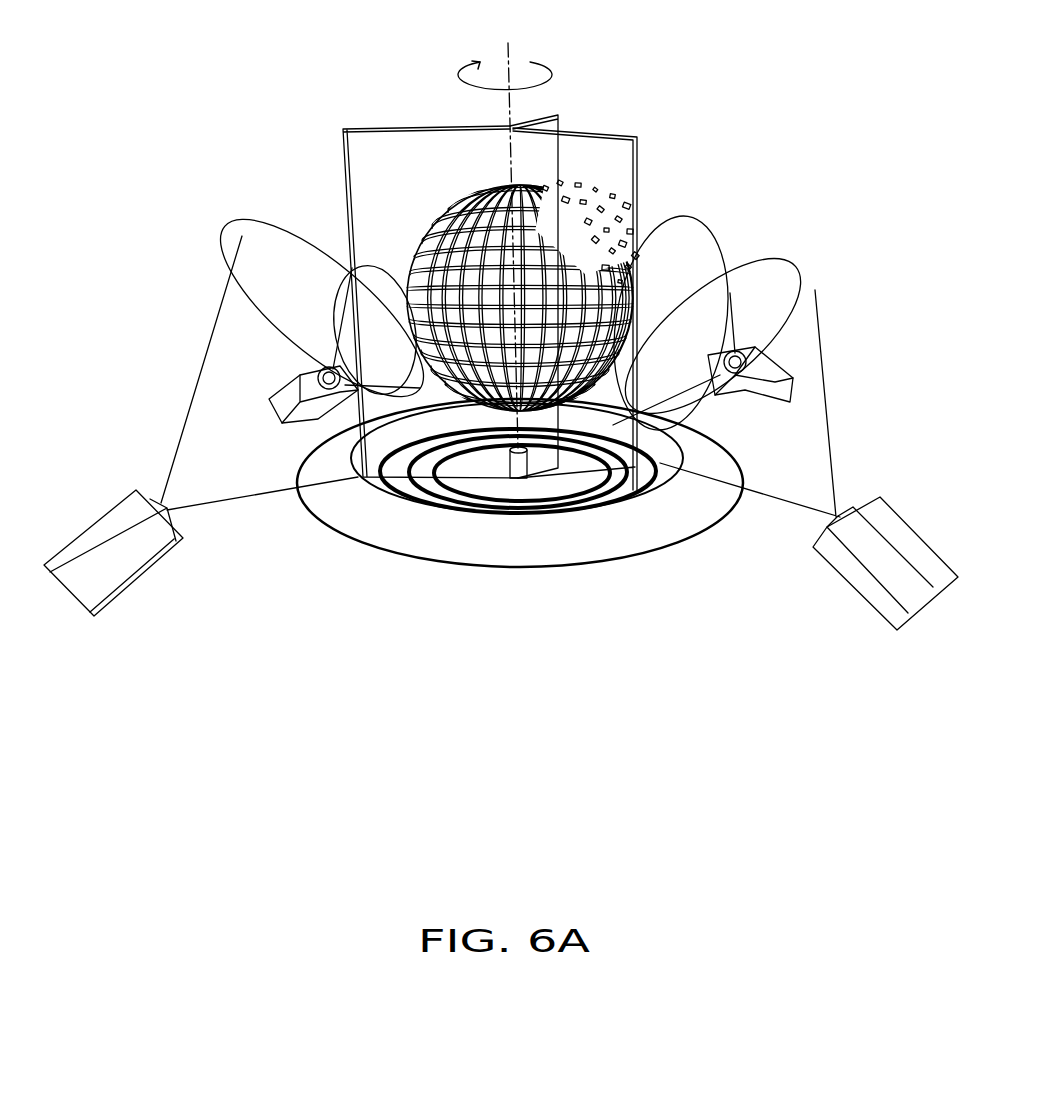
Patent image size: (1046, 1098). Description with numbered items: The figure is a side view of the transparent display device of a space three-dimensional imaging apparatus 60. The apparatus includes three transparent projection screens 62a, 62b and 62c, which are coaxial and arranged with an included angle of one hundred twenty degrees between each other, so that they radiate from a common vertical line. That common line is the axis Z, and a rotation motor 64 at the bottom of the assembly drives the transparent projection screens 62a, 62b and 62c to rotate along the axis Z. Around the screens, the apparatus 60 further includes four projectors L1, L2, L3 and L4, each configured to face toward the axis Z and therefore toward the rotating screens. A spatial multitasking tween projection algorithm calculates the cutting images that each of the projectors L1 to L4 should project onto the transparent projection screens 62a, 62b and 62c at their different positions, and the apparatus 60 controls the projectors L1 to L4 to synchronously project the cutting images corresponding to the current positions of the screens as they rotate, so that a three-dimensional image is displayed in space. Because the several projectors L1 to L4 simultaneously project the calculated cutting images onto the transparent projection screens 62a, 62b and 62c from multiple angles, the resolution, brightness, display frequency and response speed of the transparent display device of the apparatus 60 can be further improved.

The space three-dimensional imaging apparatus 60 is at (948, 793).
The transparent projection screen 62a is at (370, 128).
The transparent projection screen 62b is at (547, 115).
The transparent projection screen 62c is at (627, 132).
The rotation motor 64 is at (520, 568).
The projector L1 is at (147, 572).
The projector L2 is at (287, 386).
The projector L3 is at (753, 352).
The projector L4 is at (860, 597).
The axis Z is at (505, 225).